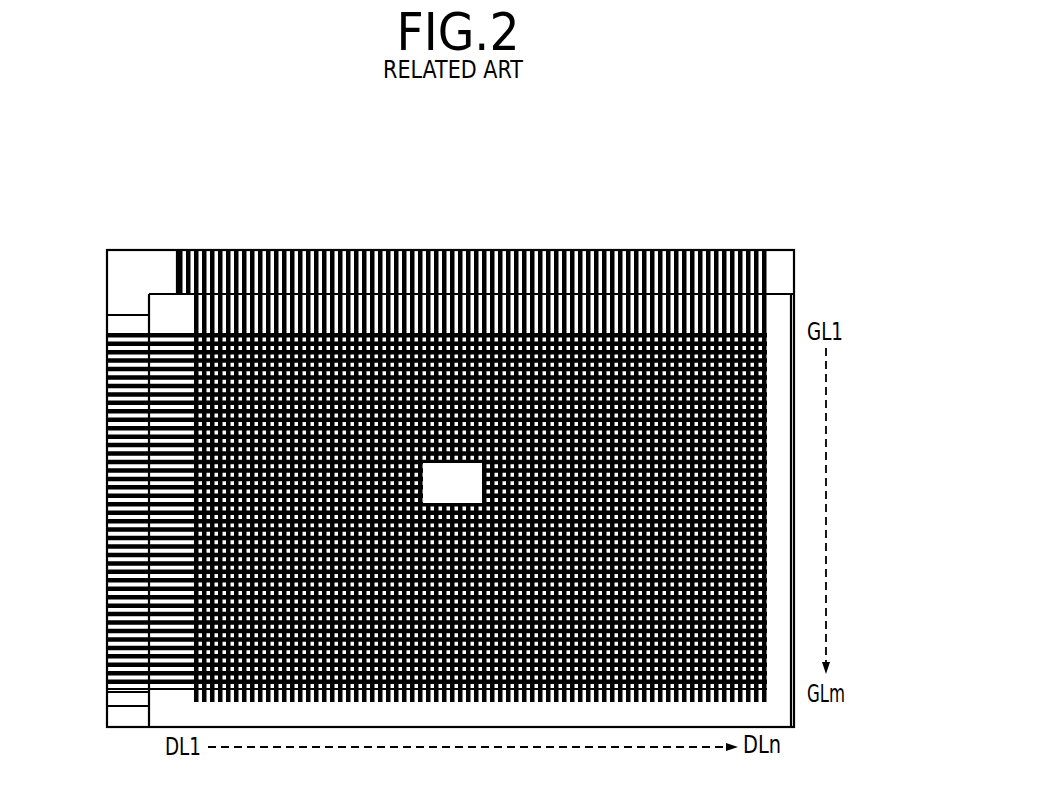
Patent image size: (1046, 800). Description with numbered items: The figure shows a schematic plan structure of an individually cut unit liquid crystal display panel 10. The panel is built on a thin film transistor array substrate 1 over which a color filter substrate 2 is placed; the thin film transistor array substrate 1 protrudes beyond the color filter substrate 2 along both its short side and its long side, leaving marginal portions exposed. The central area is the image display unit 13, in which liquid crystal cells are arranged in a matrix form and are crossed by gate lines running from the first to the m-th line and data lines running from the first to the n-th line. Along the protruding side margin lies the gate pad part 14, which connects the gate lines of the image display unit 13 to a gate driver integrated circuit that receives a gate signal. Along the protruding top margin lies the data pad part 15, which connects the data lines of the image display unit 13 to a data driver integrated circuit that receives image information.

The thin film transistor array substrate 1 is at (133, 263).
The color filter substrate 2 is at (170, 305).
The unit liquid crystal display panel 10 is at (816, 722).
The image display unit 13 is at (466, 493).
The gate pad part 14 is at (97, 705).
The data pad part 15 is at (765, 243).